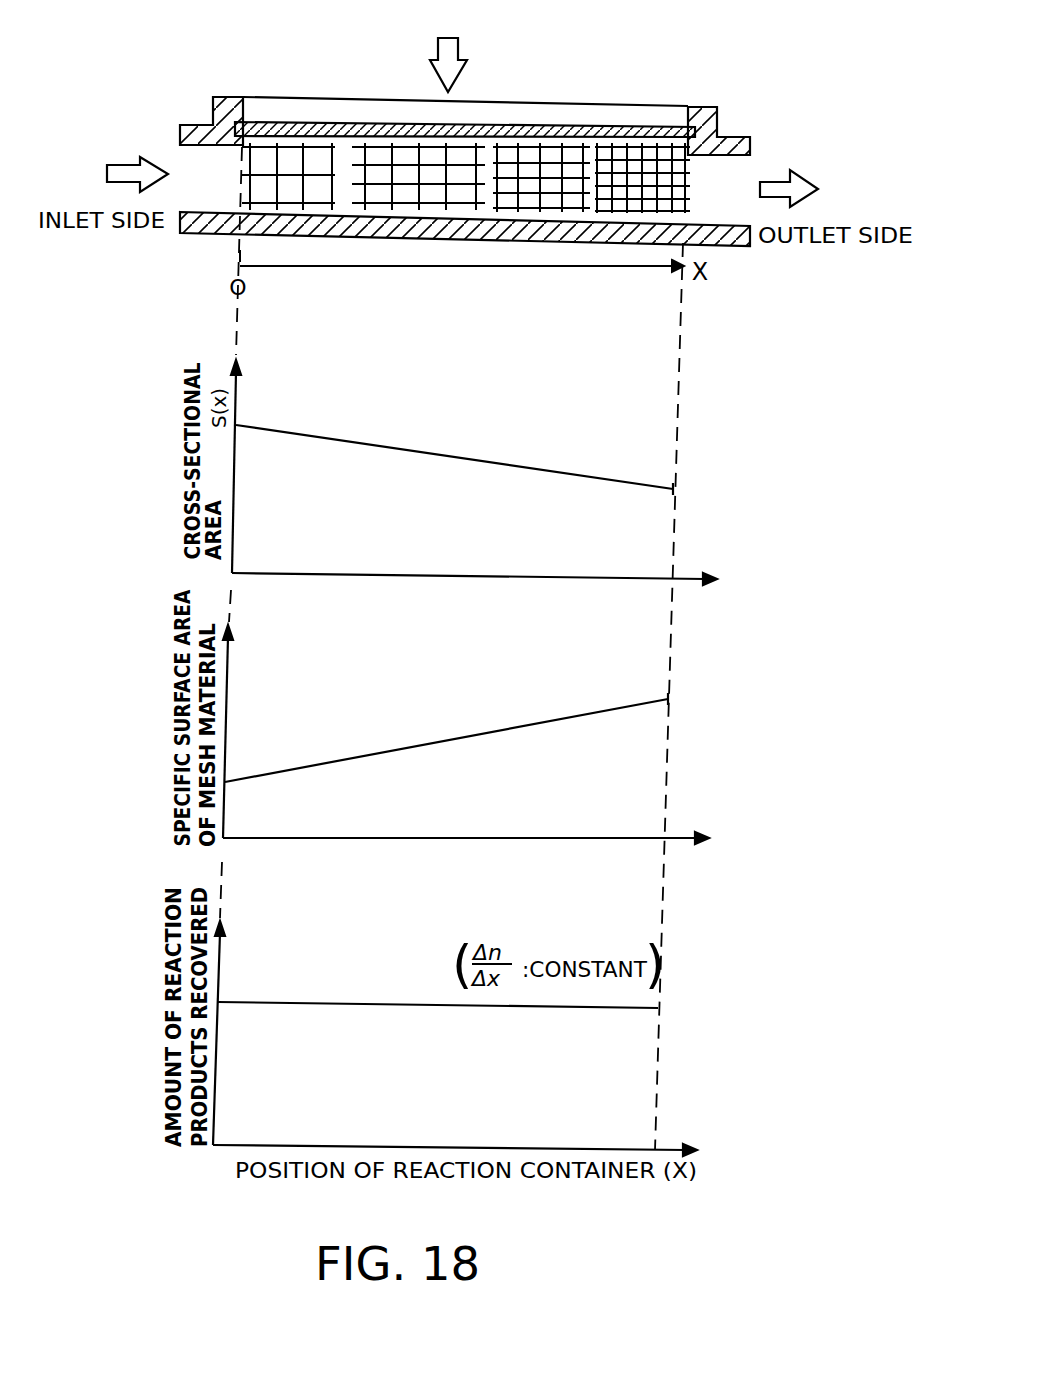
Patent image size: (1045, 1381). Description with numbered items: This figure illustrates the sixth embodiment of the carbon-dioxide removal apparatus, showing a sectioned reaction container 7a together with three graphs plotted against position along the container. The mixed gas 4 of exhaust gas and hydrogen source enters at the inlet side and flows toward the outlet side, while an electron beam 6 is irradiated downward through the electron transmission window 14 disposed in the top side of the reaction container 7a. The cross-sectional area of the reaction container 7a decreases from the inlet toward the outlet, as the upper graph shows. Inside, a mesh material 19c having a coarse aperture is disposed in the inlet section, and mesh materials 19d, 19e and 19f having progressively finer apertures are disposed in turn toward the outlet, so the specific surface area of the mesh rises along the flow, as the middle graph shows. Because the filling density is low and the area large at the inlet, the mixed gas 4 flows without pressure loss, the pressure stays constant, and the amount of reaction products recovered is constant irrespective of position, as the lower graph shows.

The mixed gas 4 is at (118, 166).
The electron beam 6 is at (460, 50).
The electron transmission window 14 is at (575, 124).
The reaction container 7a is at (704, 108).
The mesh material 19c is at (290, 196).
The mesh material 19d is at (430, 200).
The mesh material 19e is at (528, 202).
The mesh material 19f is at (637, 204).